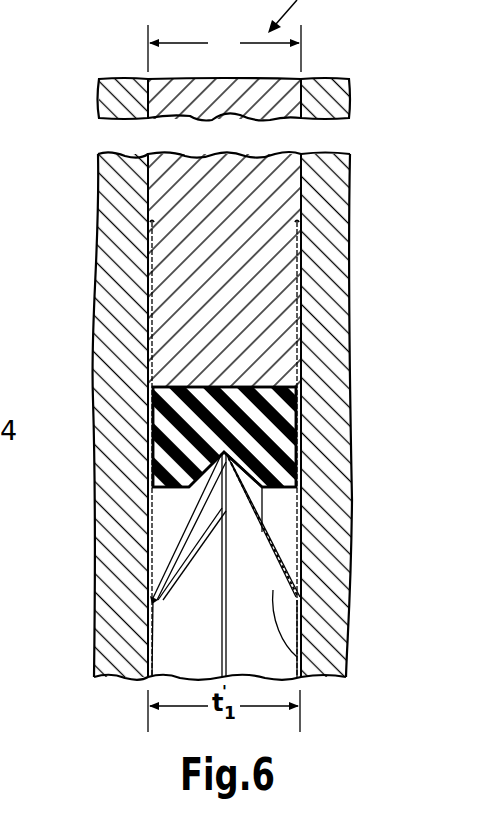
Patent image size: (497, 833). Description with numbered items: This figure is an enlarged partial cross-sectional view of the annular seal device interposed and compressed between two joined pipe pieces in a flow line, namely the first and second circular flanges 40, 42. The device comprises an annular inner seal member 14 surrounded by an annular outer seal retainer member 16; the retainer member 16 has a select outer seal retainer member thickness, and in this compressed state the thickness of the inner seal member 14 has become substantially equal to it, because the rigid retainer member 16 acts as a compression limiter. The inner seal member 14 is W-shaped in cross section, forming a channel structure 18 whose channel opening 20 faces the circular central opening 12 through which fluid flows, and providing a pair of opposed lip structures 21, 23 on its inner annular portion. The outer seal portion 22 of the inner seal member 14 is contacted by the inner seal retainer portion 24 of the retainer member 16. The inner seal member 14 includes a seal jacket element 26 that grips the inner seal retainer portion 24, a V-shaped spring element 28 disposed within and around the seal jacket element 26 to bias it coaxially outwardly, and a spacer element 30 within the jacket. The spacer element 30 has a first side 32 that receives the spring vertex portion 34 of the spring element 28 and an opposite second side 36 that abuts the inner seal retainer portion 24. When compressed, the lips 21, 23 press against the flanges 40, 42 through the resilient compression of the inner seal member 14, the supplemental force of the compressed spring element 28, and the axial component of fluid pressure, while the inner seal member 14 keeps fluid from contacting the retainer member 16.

The circular central opening 12 is at (263, 669).
The annular inner seal member 14 is at (312, 283).
The annular outer seal retainer member 16 is at (301, 78).
The channel structure 18 is at (185, 572).
The channel opening 20 is at (263, 604).
The lip structure 21 is at (155, 604).
The outer seal portion 22 is at (150, 268).
The lip structure 23 is at (290, 602).
The inner seal retainer portion 24 is at (148, 240).
The seal jacket element 26 is at (310, 660).
The spring element 28 is at (262, 532).
The spacer element 30 is at (165, 467).
The first side 32 is at (252, 492).
The spring vertex portion 34 is at (192, 495).
The second side 36 is at (273, 385).
The first circular flange 40 is at (118, 349).
The second circular flange 42 is at (328, 357).